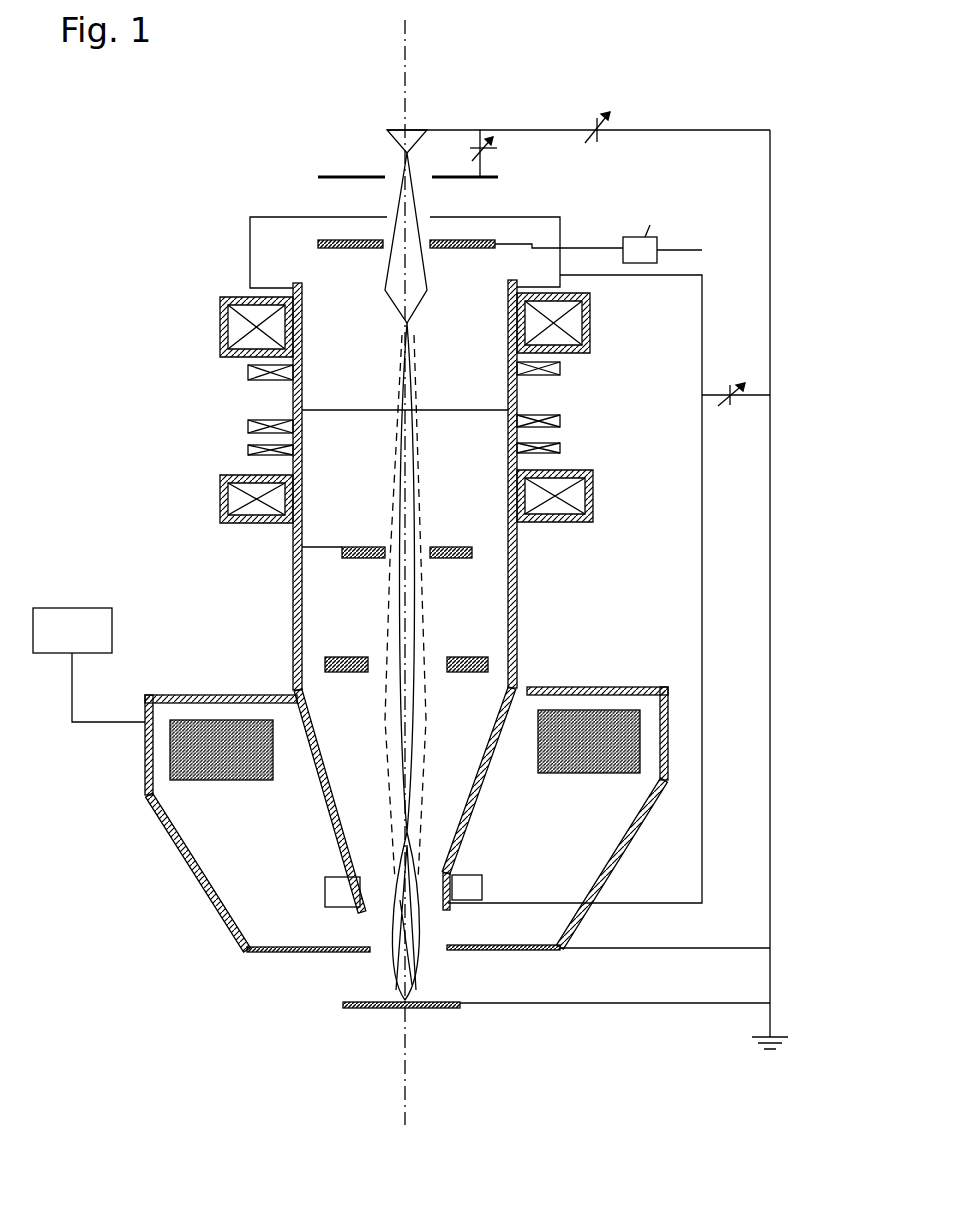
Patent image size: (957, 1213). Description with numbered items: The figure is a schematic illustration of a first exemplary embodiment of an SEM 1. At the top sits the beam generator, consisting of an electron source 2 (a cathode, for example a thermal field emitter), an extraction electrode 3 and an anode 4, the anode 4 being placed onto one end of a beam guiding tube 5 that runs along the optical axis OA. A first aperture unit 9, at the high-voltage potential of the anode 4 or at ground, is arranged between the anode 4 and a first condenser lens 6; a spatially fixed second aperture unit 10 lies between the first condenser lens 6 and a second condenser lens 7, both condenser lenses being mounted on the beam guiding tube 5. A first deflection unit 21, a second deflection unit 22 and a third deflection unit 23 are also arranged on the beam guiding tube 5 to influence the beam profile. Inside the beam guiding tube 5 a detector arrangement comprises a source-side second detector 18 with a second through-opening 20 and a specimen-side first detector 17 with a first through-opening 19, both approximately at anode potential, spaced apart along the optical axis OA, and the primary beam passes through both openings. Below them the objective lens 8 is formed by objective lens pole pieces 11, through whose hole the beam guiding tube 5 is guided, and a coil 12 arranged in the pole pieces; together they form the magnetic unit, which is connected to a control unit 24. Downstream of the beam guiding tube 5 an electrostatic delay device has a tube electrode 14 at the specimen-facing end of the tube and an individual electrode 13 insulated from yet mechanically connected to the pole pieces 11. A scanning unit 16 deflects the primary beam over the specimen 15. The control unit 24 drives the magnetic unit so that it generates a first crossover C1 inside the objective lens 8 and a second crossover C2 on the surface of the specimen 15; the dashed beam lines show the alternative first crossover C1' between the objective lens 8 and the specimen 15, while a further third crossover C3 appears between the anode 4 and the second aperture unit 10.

The SEM 1 is at (110, 198).
The electron source 2 is at (397, 125).
The extraction electrode 3 is at (328, 176).
The anode 4 is at (258, 217).
The beam guiding tube 5 is at (293, 578).
The first condenser lens 6 is at (590, 328).
The second condenser lens 7 is at (590, 500).
The objective lens 8 is at (622, 937).
The first aperture unit 9 is at (325, 240).
The second aperture unit 10 is at (302, 410).
The objective lens pole pieces 11 is at (668, 691).
The coil 12 is at (640, 767).
The individual electrode 13 is at (508, 950).
The tube electrode 14 is at (448, 910).
The specimen 15 is at (437, 1010).
The scanning unit 16 is at (325, 892).
The first detector 17 is at (302, 663).
The second detector 18 is at (302, 548).
The first through-opening 19 is at (372, 673).
The second through-opening 20 is at (385, 535).
The first deflection unit 21 is at (560, 370).
The second deflection unit 22 is at (560, 420).
The third deflection unit 23 is at (560, 447).
The control unit 24 is at (90, 608).
The first crossover C1 is at (426, 898).
The first crossover (alternative position) C1' is at (448, 974).
The second crossover C2 is at (400, 997).
The third crossover C3 is at (405, 322).
The optical axis OA is at (407, 90).